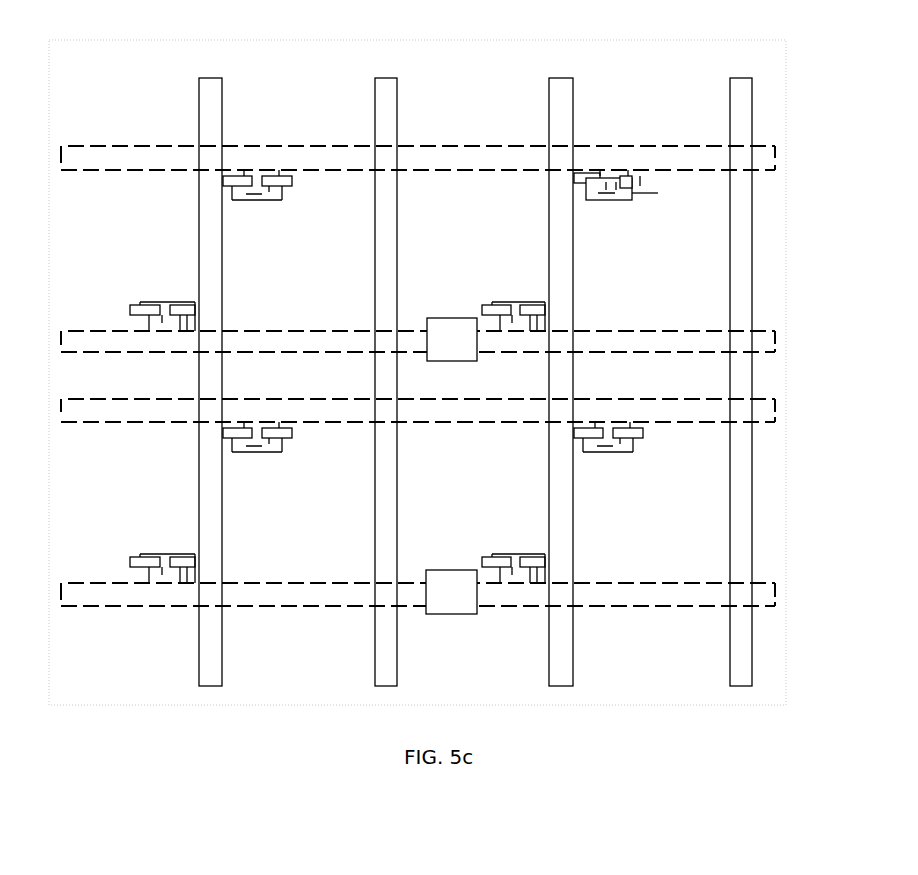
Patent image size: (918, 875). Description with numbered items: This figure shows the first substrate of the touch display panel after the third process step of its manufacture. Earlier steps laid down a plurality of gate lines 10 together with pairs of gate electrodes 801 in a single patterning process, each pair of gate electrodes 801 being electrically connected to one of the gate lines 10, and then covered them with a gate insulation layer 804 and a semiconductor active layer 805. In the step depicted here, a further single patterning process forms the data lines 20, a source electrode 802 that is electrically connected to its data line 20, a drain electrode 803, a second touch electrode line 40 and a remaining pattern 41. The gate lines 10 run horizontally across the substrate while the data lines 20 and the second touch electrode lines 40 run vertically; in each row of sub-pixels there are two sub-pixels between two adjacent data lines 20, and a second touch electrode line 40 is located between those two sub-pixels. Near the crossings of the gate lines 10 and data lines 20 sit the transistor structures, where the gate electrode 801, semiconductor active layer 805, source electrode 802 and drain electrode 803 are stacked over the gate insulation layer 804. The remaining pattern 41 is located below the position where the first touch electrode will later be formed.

The gate insulation layer 804 is at (531, 38).
The data line 20 is at (213, 80).
The second touch electrode line 40 is at (386, 80).
The gate line 10 is at (772, 151).
The remaining pattern 41 is at (443, 606).
The gate electrode 801 is at (608, 177).
The source electrode 802 is at (580, 172).
The drain electrode 803 is at (637, 175).
The semiconductor active layer 805 is at (658, 193).